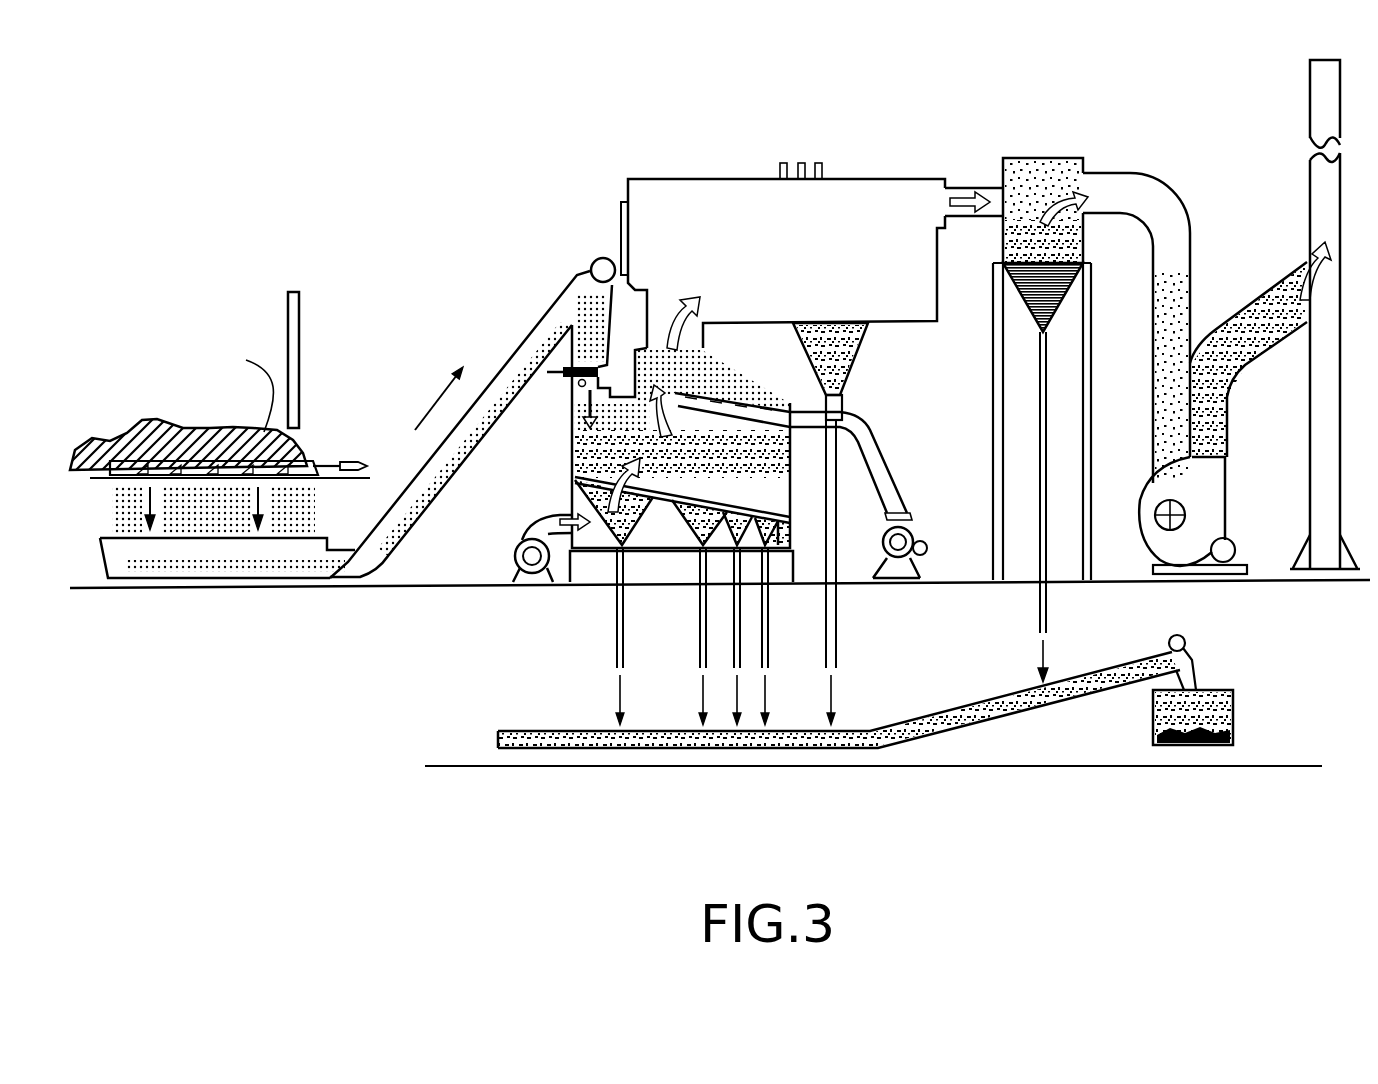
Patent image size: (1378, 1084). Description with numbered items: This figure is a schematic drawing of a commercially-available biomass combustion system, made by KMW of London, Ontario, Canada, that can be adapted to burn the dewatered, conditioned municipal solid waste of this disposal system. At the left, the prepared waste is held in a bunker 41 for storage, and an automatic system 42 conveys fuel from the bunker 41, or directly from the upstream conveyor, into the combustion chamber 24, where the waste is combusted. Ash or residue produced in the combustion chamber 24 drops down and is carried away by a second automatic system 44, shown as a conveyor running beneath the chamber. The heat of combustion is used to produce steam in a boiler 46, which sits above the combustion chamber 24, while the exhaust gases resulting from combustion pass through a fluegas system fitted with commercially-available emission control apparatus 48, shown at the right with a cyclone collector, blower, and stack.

The bunker 41 is at (212, 318).
The automatic system 42 is at (364, 545).
The combustion chamber 24 is at (572, 450).
The boiler 46 is at (833, 178).
The emission control apparatus 48 is at (1172, 146).
The automatic system 44 is at (807, 750).